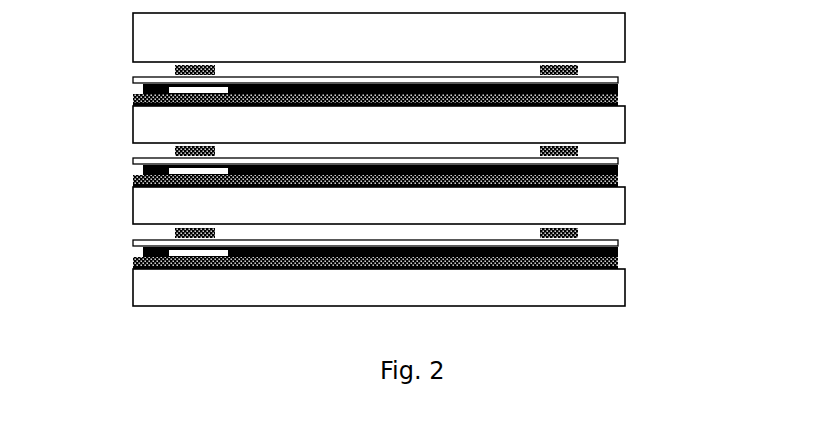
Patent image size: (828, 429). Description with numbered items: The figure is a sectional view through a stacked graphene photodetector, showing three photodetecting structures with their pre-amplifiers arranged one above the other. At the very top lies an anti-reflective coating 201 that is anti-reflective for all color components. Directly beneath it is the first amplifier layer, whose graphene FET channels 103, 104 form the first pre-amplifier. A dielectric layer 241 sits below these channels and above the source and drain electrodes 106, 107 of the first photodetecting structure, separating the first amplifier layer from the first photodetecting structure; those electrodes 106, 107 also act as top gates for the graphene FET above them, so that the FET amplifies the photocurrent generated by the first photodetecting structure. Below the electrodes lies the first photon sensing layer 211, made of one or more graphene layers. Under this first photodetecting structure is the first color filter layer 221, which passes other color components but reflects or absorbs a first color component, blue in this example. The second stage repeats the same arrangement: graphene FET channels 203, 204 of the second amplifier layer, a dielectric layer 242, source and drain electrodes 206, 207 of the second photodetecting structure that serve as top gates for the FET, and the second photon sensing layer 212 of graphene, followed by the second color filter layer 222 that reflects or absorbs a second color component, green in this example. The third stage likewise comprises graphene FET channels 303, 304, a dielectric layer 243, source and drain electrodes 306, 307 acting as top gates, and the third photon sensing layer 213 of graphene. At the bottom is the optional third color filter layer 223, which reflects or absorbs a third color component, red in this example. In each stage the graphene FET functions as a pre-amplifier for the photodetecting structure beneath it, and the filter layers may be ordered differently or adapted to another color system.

The anti-reflective coating 201 is at (133, 32).
The graphene FET channel 103 is at (175, 72).
The graphene FET channel 104 is at (578, 67).
The source electrode 106 is at (143, 90).
The drain electrode 107 is at (618, 85).
The first photon sensing layer 211 is at (618, 100).
The first color filter layer 221 is at (133, 121).
The dielectric layer 241 is at (618, 75).
The graphene FET channel 203 is at (175, 153).
The graphene FET channel 204 is at (578, 148).
The source electrode 206 is at (143, 171).
The drain electrode 207 is at (618, 167).
The second photon sensing layer 212 is at (618, 181).
The second color filter layer 222 is at (133, 202).
The dielectric layer 242 is at (618, 156).
The graphene FET channel 303 is at (175, 235).
The graphene FET channel 304 is at (578, 230).
The source electrode 306 is at (143, 253).
The drain electrode 307 is at (618, 249).
The third photon sensing layer 213 is at (620, 264).
The third color filter layer 223 is at (133, 285).
The dielectric layer 243 is at (618, 238).